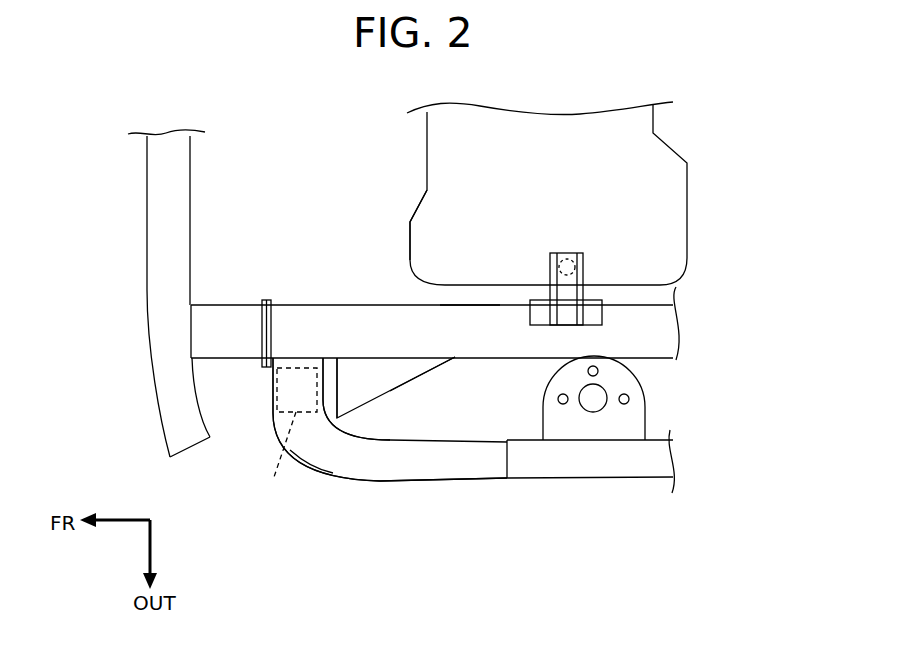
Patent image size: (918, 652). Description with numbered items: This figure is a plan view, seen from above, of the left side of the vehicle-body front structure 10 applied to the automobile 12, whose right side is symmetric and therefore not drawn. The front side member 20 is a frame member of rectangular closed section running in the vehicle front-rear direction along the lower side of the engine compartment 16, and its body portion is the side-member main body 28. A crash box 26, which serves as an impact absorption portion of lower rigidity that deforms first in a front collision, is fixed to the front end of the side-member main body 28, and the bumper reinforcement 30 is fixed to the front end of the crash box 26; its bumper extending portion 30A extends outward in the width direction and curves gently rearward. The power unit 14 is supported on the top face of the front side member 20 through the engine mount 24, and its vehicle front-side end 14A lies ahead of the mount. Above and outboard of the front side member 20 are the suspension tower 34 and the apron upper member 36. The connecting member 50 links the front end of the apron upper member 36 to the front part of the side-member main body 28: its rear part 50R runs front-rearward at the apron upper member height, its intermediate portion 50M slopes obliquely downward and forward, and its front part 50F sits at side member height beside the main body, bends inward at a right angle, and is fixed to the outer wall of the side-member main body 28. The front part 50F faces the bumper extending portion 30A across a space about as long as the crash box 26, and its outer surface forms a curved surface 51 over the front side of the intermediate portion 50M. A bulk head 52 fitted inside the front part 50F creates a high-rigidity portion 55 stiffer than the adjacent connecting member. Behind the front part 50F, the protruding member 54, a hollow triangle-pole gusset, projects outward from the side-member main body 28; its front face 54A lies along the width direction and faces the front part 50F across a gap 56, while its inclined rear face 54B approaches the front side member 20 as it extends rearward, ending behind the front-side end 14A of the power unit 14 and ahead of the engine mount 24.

The vehicle-body front structure 10 is at (325, 567).
The automobile 12 is at (657, 512).
The power unit 14 is at (687, 196).
The vehicle front-side end of the power unit 14A is at (408, 237).
The engine compartment 16 is at (305, 190).
The front side member 20 is at (344, 300).
The engine mount 24 is at (563, 252).
The crash box 26 is at (224, 300).
The side-member main body 28 is at (465, 303).
The bumper reinforcement 30 is at (147, 225).
The bumper extending portion 30A is at (152, 412).
The suspension tower 34 is at (647, 407).
The apron upper member 36 is at (583, 470).
The connecting member 50 is at (427, 486).
The front part of the connecting member 50F is at (272, 405).
The intermediate portion of the connecting member 50M is at (376, 472).
The rear part of the connecting member 50R is at (483, 470).
The curved surface 51 is at (310, 467).
The bulk head 52 is at (277, 461).
The protruding member 54 is at (392, 397).
The front face of the protruding member 54A is at (327, 420).
The rear face of the protruding member 54B is at (420, 379).
The high-rigidity portion 55 is at (283, 387).
The gap 56 is at (332, 383).